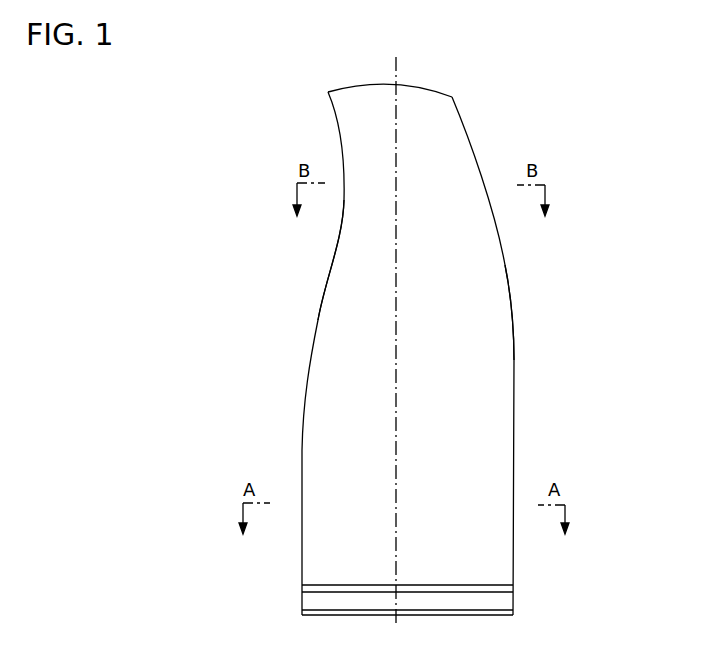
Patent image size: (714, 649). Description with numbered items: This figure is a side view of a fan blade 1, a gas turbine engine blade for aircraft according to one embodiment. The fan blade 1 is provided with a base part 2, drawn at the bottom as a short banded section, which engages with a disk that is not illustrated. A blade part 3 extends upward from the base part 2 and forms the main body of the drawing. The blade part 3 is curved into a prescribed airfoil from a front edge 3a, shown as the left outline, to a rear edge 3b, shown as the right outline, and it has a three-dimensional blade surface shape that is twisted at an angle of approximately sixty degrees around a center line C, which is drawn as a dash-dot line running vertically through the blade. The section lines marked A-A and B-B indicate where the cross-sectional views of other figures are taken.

The fan blade 1 is at (540, 121).
The base part 2 is at (504, 600).
The blade part 3 is at (482, 270).
The front edge 3a is at (322, 302).
The rear edge 3b is at (514, 340).
The center line C is at (397, 73).